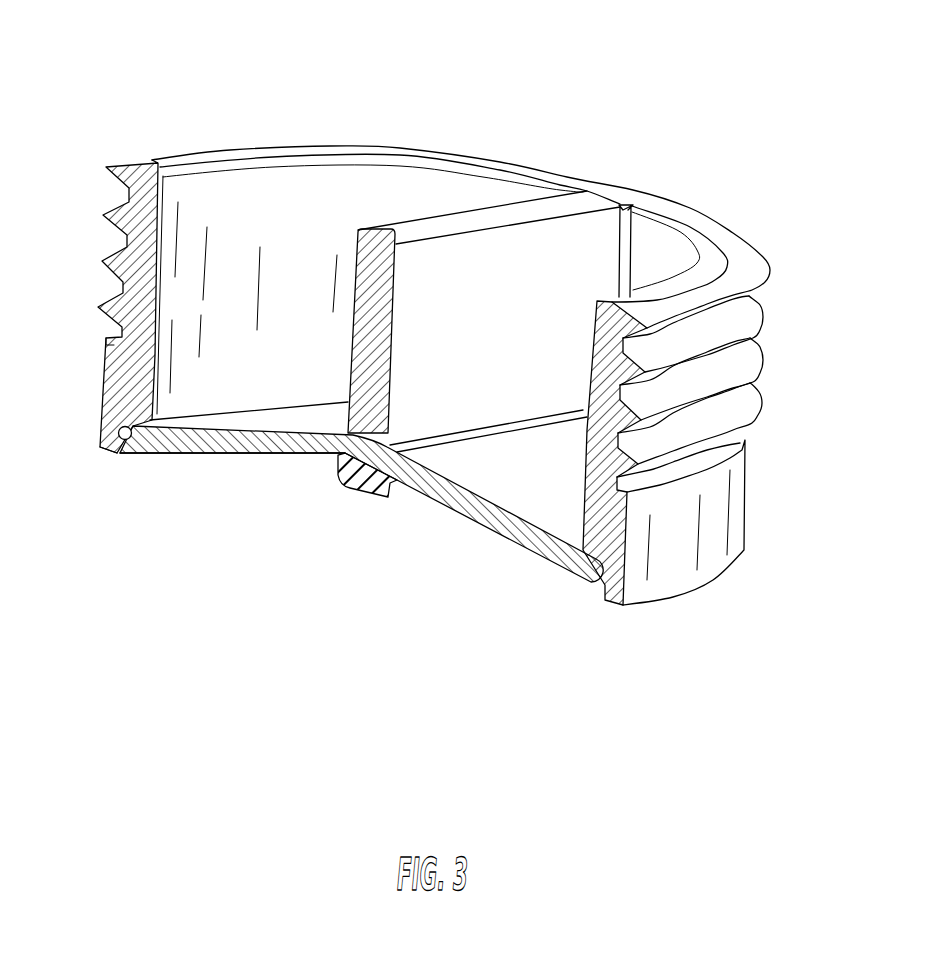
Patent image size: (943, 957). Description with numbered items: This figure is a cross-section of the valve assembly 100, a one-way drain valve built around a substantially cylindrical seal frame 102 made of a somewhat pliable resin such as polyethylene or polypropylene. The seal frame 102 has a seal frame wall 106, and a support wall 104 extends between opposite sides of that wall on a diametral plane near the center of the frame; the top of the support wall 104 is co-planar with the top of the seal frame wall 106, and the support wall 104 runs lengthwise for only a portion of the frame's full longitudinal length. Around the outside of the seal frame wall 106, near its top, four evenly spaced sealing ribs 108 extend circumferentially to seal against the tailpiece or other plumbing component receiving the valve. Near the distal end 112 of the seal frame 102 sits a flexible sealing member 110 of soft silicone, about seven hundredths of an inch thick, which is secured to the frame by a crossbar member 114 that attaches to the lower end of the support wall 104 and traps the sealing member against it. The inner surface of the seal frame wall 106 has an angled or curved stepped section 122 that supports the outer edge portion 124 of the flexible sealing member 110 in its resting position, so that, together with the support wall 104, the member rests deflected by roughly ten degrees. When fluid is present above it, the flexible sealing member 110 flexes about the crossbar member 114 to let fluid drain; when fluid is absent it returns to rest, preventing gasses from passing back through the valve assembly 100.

The valve assembly 100 is at (248, 95).
The seal frame 102 is at (682, 553).
The support wall 104 is at (595, 242).
The seal frame wall 106 is at (108, 397).
The sealing ribs 108 is at (752, 317).
The flexible sealing member 110 is at (533, 543).
The distal end 112 is at (96, 463).
The crossbar member 114 is at (362, 492).
The stepped section 122 is at (140, 472).
The outer edge portion 124 is at (122, 437).